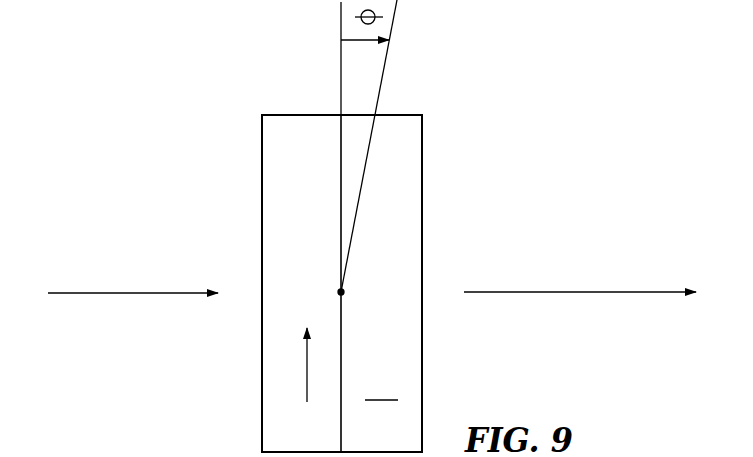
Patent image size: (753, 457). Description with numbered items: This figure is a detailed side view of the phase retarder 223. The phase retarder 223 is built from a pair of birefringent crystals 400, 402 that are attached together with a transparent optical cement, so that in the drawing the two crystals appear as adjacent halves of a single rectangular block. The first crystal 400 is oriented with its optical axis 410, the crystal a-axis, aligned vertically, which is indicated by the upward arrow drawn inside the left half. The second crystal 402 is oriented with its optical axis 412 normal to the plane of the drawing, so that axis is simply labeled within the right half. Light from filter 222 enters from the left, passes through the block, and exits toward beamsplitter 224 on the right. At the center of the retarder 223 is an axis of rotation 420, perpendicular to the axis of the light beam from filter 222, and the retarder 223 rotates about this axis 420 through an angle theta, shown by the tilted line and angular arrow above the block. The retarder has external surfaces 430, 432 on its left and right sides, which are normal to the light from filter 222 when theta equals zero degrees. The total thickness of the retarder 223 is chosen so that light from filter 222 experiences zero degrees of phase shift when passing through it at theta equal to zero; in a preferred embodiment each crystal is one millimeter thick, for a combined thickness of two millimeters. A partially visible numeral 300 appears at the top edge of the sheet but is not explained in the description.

The birefringent crystal 400 is at (279, 113).
The birefringent crystal 402 is at (409, 113).
The external surface 430 is at (262, 157).
The external surface 432 is at (422, 176).
The axis of rotation 420 is at (345, 292).
The optical axis 410 is at (307, 369).
The optical axis 412 is at (381, 387).
The phase retarder 223 is at (262, 421).
The optical axis reference 300 is at (187, 5).
The filter 222 is at (126, 292).
The beamsplitter 224 is at (569, 292).